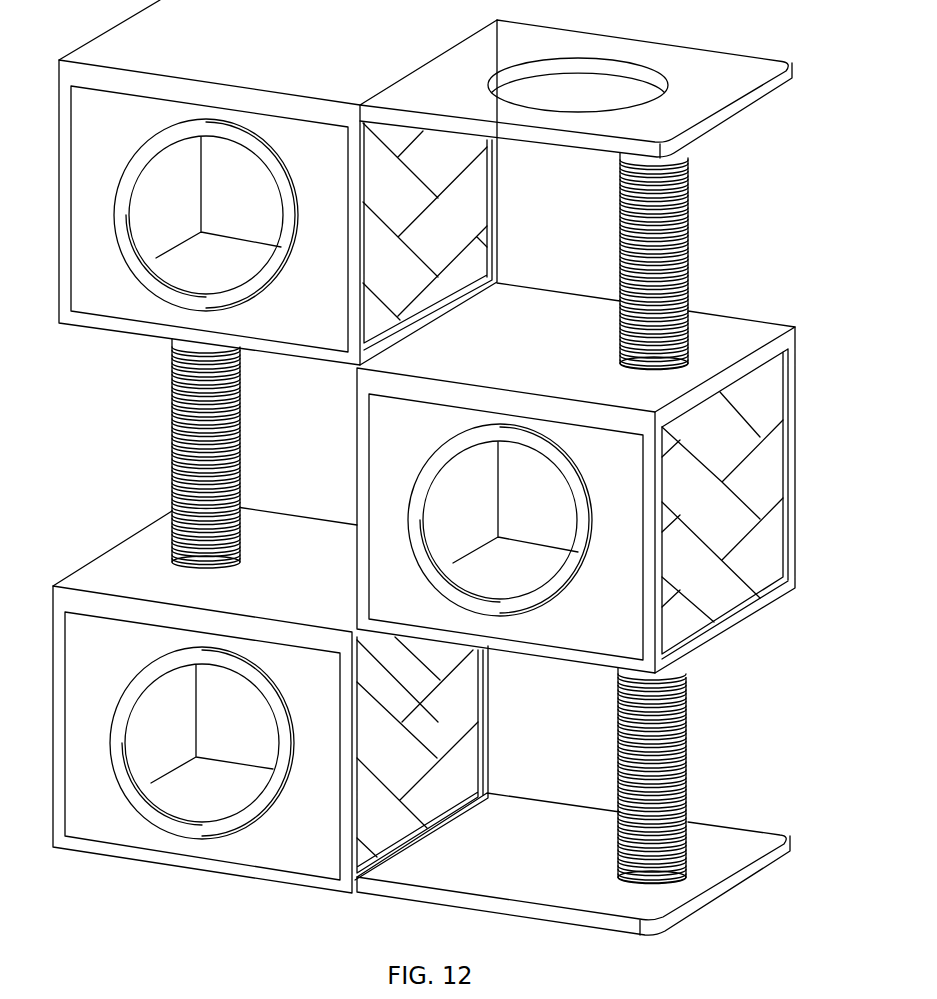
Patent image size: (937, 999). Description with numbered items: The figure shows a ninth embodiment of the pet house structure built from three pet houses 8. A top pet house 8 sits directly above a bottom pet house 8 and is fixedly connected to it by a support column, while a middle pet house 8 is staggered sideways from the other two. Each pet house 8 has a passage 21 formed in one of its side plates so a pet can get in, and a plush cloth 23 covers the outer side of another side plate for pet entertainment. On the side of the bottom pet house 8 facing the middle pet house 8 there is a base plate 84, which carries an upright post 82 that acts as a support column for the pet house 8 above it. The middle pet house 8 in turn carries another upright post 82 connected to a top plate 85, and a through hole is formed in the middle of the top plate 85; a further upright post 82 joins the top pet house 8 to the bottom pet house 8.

The pet house 8 is at (87, 302).
The passage 21 is at (198, 787).
The plush cloth 23 is at (747, 573).
The upright post 82 is at (658, 200).
The base plate 84 is at (473, 863).
The top plate 85 is at (698, 93).